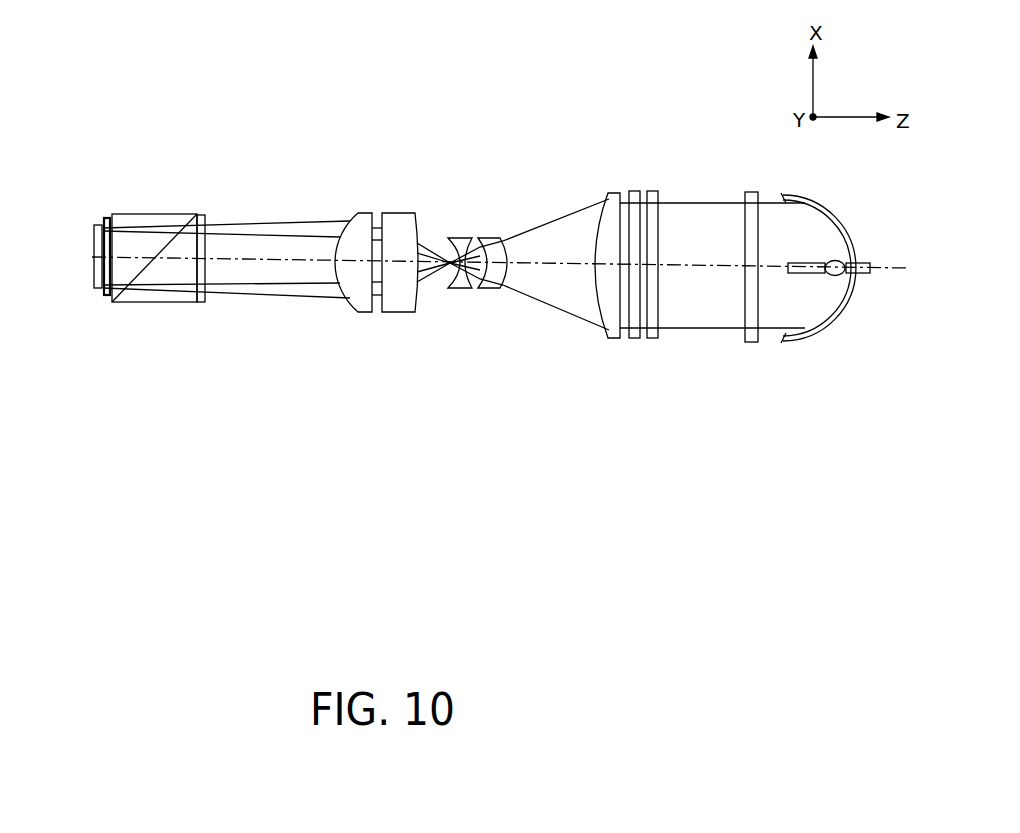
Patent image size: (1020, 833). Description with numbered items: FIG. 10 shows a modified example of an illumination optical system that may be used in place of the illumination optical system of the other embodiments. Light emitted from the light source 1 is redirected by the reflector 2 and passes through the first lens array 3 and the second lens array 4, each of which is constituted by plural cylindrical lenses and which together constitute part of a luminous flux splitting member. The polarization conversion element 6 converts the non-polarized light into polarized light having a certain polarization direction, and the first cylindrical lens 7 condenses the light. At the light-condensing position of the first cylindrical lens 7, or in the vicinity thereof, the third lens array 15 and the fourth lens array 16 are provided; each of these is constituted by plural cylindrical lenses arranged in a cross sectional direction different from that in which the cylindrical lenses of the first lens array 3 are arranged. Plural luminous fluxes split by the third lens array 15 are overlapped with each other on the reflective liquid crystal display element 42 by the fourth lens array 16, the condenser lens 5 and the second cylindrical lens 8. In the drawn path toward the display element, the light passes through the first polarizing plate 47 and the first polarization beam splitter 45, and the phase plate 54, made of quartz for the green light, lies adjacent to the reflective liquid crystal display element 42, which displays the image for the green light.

The light source 1 is at (842, 258).
The reflector 2 is at (812, 202).
The first lens array 3 is at (755, 192).
The second lens array 4 is at (652, 191).
The condenser lens 5 is at (402, 212).
The polarization conversion element 6 is at (633, 191).
The first cylindrical lens 7 is at (615, 192).
The second cylindrical lens 8 is at (358, 212).
The third lens array 15 is at (497, 237).
The fourth lens array 16 is at (463, 237).
The reflective liquid crystal display element 42 is at (94, 248).
The first polarization beam splitter 45 is at (155, 212).
The first polarizing plate 47 is at (203, 214).
The phase plate 54 is at (106, 214).